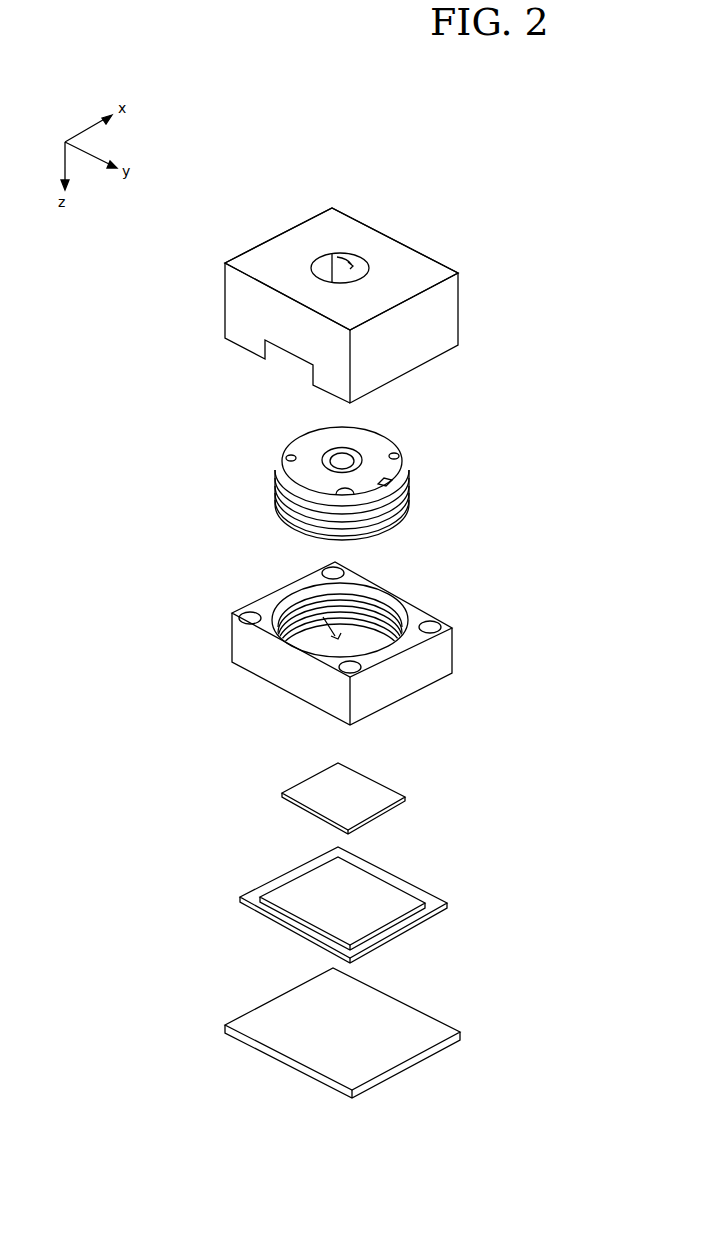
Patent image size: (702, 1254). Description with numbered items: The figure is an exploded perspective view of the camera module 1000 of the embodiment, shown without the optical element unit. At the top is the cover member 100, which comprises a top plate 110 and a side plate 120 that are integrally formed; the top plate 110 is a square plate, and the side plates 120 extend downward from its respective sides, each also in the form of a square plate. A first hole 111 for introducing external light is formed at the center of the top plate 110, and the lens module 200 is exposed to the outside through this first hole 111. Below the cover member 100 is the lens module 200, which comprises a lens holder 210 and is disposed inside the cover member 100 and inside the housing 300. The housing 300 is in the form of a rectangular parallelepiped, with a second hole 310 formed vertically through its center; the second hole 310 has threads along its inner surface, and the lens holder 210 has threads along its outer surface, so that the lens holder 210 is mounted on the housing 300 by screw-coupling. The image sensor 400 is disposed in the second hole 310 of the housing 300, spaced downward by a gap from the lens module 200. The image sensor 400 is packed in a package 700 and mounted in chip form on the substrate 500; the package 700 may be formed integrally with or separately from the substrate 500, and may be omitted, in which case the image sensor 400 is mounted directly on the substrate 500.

The camera module 1000 is at (483, 140).
The cover member 100 is at (465, 293).
The top plate 110 is at (332, 208).
The first hole 111 is at (347, 263).
The side plate 120 is at (237, 310).
The lens module 200 is at (420, 455).
The lens holder 210 is at (288, 448).
The housing 300 is at (427, 602).
The second hole 310 is at (275, 615).
The image sensor 400 is at (407, 793).
The package 700 is at (450, 903).
The substrate 500 is at (462, 1032).